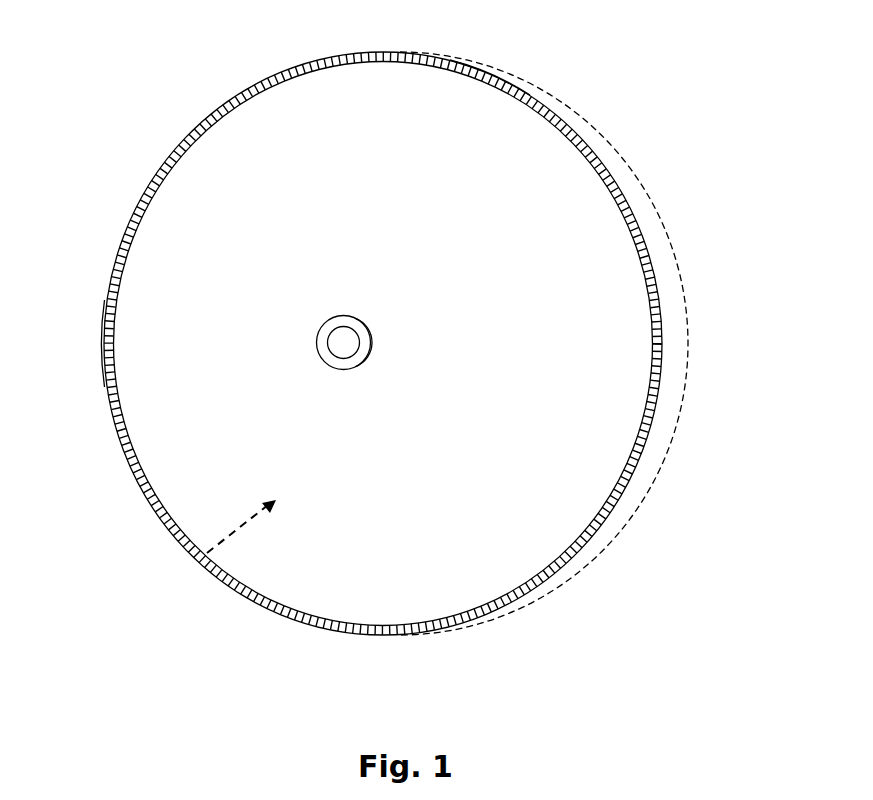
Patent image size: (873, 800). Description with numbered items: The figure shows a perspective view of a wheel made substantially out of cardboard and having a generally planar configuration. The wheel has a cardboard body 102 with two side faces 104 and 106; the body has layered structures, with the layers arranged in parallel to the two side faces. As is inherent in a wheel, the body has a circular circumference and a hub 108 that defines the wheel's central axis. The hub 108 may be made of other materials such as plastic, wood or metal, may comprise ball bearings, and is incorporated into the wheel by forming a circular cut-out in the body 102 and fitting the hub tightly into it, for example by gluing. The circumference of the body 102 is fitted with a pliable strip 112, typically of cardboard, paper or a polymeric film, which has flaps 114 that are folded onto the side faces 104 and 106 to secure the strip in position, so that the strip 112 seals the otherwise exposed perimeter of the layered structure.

The cardboard body 102 is at (281, 103).
The side face 104 is at (146, 275).
The side face 106 is at (206, 556).
The hub 108 is at (343, 349).
The pliable strip 112 is at (662, 266).
The flaps 114 is at (492, 83).